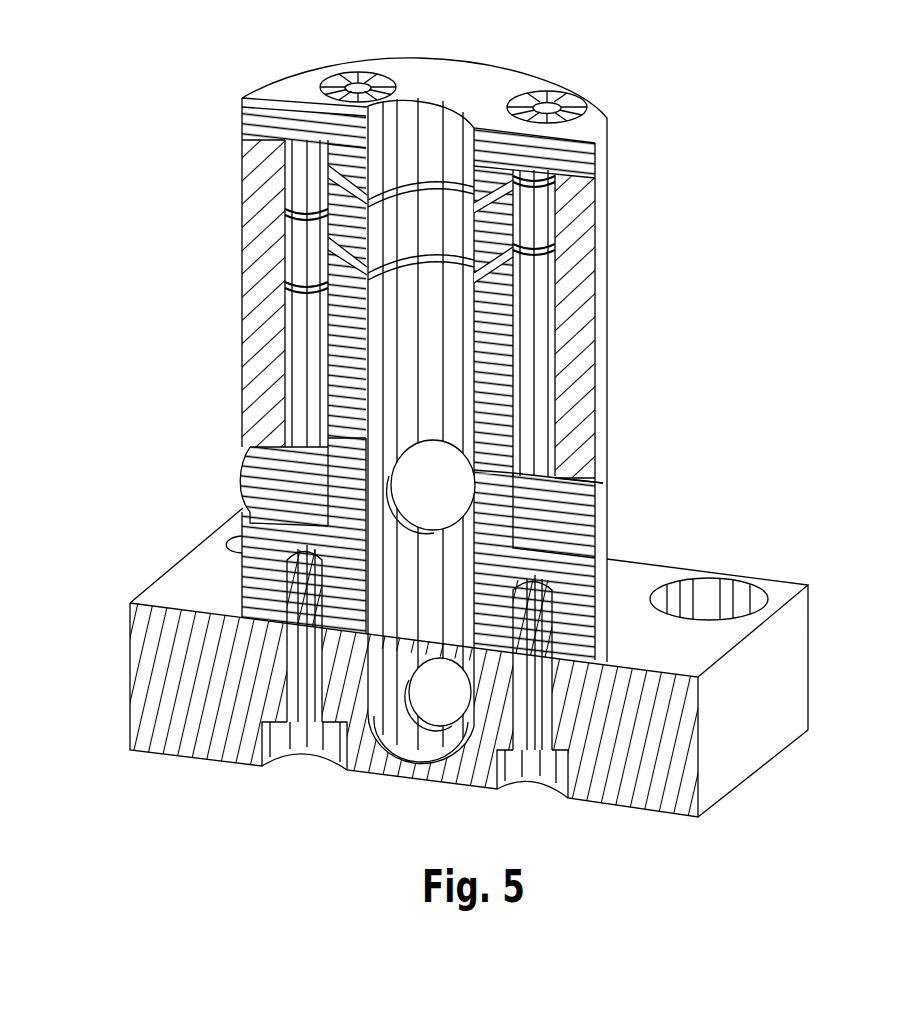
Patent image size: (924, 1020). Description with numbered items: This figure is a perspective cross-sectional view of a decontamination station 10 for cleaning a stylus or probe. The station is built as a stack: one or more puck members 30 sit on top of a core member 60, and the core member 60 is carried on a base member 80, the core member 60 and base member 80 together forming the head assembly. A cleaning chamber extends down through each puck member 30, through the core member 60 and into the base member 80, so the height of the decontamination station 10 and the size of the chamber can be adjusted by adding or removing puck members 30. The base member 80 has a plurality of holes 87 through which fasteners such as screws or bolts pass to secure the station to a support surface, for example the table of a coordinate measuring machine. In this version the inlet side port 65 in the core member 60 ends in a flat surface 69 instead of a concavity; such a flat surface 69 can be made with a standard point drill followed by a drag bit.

The decontamination station 10 is at (619, 140).
The puck member 30 is at (607, 216).
The core member 60 is at (607, 352).
The inlet side port 65 is at (600, 512).
The flat surface 69 is at (603, 484).
The base member 80 is at (792, 667).
The holes 87 is at (707, 592).